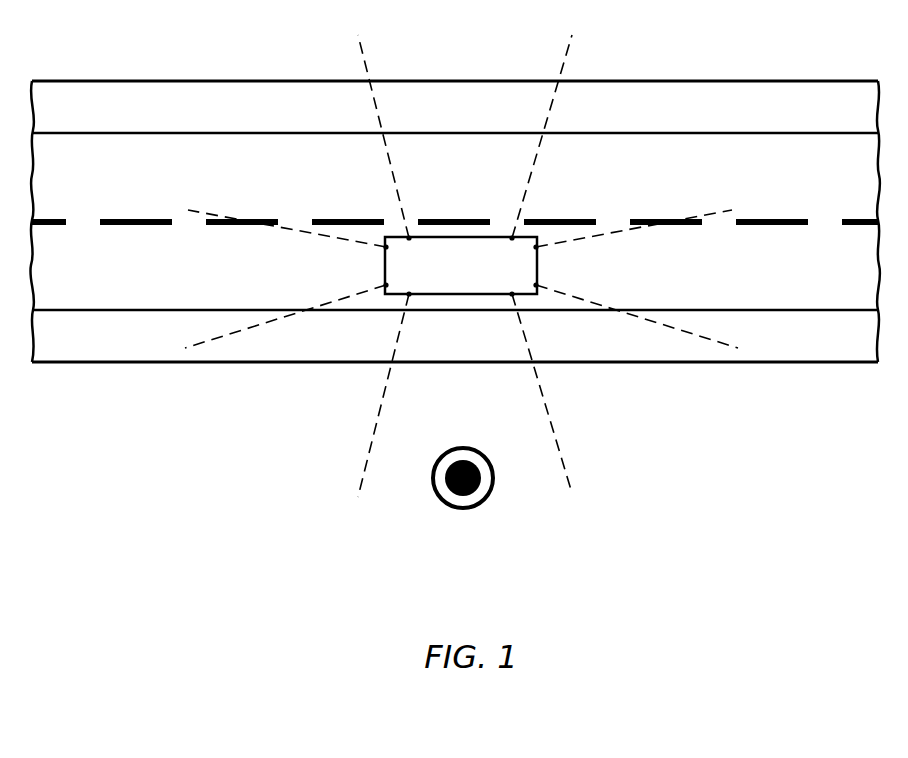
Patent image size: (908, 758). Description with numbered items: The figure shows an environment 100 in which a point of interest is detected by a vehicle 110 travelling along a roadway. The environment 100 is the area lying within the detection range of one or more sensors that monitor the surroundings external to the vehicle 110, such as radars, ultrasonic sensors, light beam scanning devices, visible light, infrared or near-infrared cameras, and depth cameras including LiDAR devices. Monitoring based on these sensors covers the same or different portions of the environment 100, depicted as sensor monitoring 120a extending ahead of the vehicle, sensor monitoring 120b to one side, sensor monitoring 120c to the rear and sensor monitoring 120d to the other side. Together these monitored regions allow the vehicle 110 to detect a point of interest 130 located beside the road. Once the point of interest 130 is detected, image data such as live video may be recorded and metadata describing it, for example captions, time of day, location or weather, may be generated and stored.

The environment 100 is at (206, 521).
The vehicle 110 is at (460, 265).
The sensor monitoring 120a is at (532, 155).
The sensor monitoring 120b is at (602, 305).
The sensor monitoring 120c is at (400, 331).
The sensor monitoring 120d is at (317, 308).
The point of interest 130 is at (487, 500).